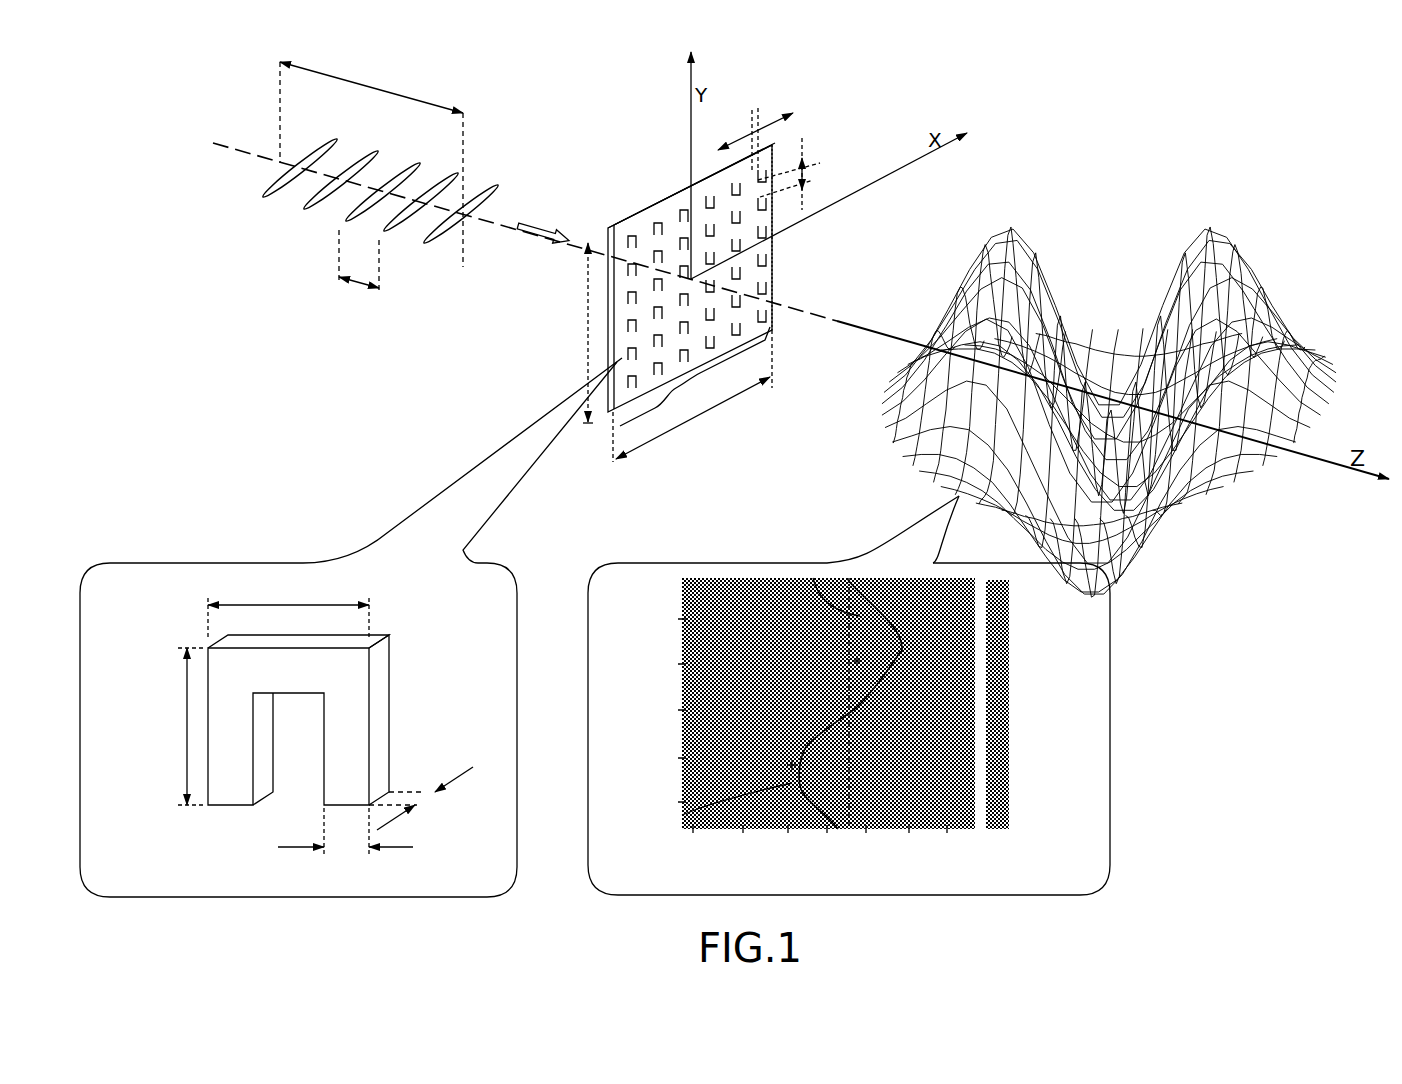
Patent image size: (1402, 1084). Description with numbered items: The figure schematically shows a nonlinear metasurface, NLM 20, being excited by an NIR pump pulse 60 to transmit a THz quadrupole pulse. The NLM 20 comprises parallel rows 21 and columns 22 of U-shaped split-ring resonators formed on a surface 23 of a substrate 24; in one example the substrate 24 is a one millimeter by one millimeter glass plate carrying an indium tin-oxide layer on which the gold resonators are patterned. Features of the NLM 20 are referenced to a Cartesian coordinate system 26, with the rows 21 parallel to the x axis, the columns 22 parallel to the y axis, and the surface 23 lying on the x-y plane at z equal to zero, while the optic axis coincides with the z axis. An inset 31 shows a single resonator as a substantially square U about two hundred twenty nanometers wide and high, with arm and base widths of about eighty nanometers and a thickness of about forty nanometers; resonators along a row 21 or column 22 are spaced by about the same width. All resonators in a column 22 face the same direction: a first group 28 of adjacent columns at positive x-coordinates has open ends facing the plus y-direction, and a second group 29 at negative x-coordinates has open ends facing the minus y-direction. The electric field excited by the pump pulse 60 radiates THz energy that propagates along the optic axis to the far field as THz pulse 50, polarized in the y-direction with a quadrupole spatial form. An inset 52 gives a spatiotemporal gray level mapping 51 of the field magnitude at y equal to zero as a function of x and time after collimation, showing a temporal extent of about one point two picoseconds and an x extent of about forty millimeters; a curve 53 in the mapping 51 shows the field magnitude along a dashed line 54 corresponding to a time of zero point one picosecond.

The NLM 20 is at (677, 292).
The rows 21 is at (696, 279).
The columns 22 is at (701, 245).
The surface 23 is at (660, 200).
The substrate 24 is at (611, 216).
The Cartesian coordinate system 26 is at (500, 234).
The first group 28 is at (733, 363).
The second group 29 is at (660, 428).
The inset 31 is at (349, 627).
The THz pulse 50 is at (1257, 251).
The spatiotemporal gray level mapping 51 is at (724, 574).
The inset 52 is at (872, 695).
The curve 53 is at (682, 815).
The dashed line 54 is at (813, 578).
The NIR pump pulse 60 is at (270, 217).